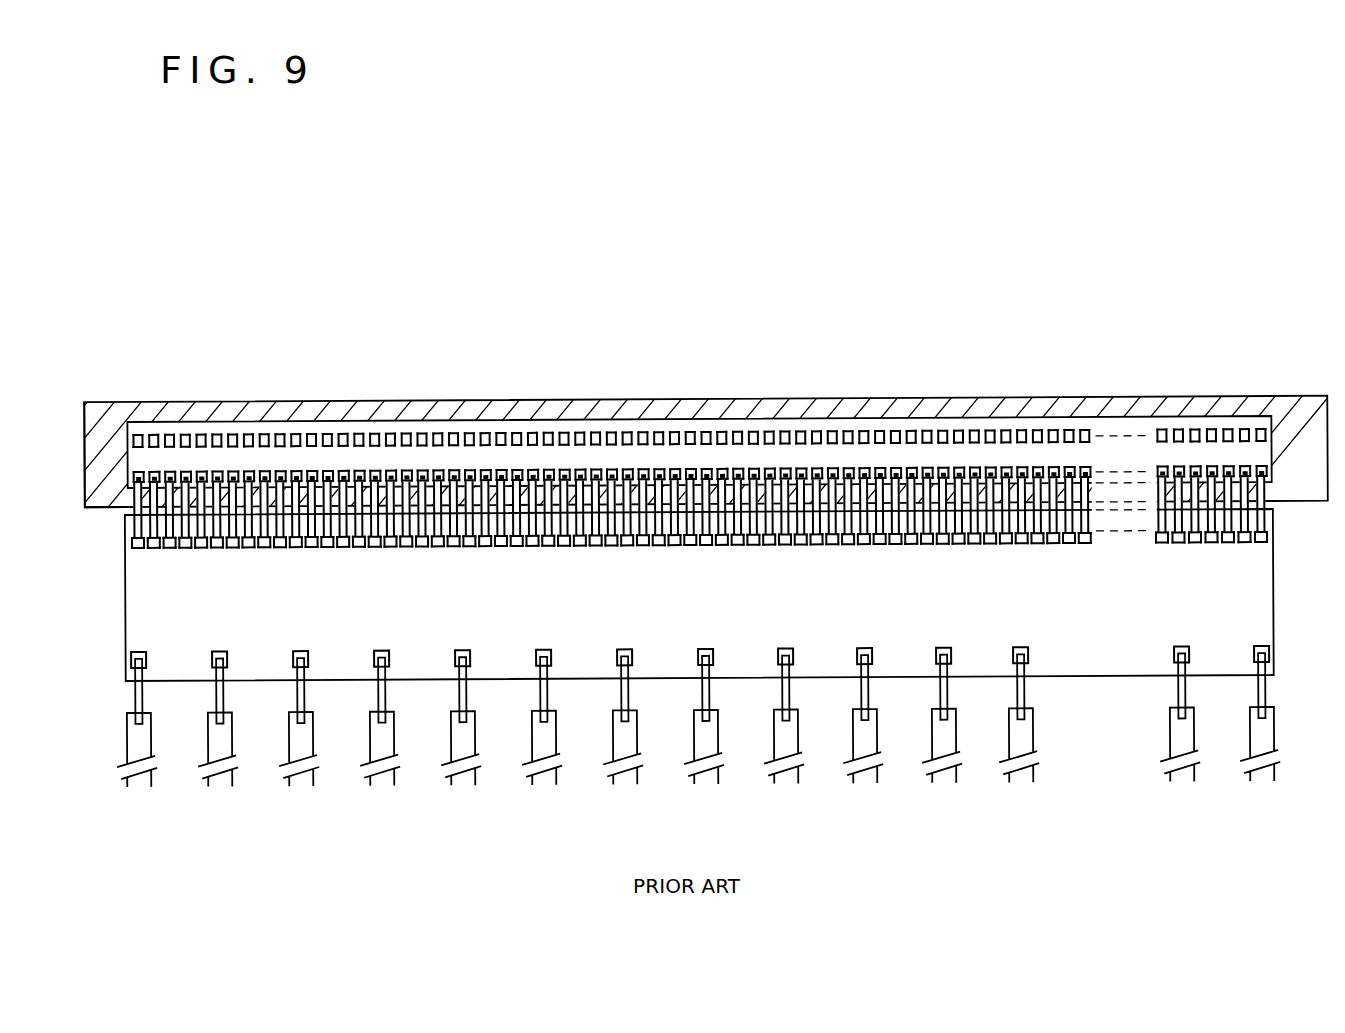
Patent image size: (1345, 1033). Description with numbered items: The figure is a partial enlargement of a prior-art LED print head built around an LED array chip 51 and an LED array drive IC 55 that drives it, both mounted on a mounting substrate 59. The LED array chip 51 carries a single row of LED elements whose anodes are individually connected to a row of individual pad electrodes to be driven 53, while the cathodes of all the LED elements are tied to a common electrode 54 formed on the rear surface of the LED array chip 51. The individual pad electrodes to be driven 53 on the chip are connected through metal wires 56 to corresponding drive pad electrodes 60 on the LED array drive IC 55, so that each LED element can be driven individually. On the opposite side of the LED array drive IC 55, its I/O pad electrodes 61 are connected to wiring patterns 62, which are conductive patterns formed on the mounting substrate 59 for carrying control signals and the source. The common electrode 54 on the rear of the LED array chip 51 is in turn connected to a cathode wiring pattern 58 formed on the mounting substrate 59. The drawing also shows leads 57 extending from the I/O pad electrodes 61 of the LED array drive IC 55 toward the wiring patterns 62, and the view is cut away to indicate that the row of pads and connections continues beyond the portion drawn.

The LED array chip 51 is at (957, 420).
The individual pad electrodes to be driven 53 is at (142, 471).
The common electrode 54 is at (807, 421).
The LED array drive IC 55 is at (150, 582).
The metal wires 56 is at (1265, 522).
The inner leads 57 is at (1267, 683).
The cathode wiring pattern 58 is at (103, 437).
The mounting substrate 59 is at (693, 698).
The drive pad electrodes 60 is at (132, 542).
The I/O pad electrodes 61 is at (129, 653).
The wiring patterns 62 is at (122, 748).